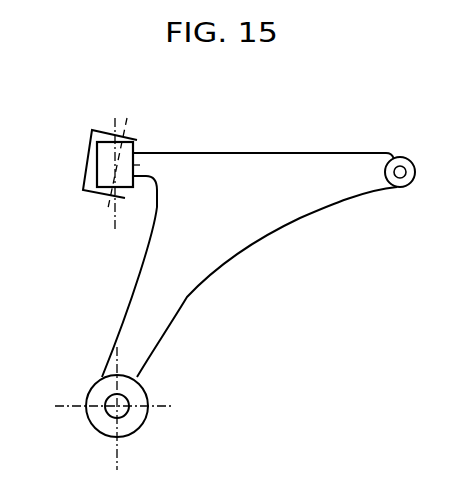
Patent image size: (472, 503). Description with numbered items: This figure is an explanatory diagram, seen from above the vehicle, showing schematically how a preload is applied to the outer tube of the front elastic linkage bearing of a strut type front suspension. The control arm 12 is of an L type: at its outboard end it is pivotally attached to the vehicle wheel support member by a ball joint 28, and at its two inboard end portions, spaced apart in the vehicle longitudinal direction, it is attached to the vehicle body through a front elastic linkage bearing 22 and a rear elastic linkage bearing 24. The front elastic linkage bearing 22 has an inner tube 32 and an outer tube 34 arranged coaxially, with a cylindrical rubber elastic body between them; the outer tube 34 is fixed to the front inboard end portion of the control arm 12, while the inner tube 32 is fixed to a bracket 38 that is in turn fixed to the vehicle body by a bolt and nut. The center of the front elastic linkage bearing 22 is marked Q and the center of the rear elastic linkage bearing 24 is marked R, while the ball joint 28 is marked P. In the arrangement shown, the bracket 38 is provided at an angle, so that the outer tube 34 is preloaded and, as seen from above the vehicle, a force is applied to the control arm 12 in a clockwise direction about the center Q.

The control arm 12 is at (289, 142).
The front elastic linkage bearing 22 is at (143, 144).
The rear elastic linkage bearing 24 is at (149, 430).
The ball joint 28 is at (399, 157).
The inner tube 32 is at (98, 195).
The outer tube 34 is at (135, 165).
The bracket 38 is at (105, 133).
The point P is at (402, 174).
The center of the front elastic linkage bearing Q is at (115, 163).
The center of the rear elastic linkage bearing R is at (113, 403).